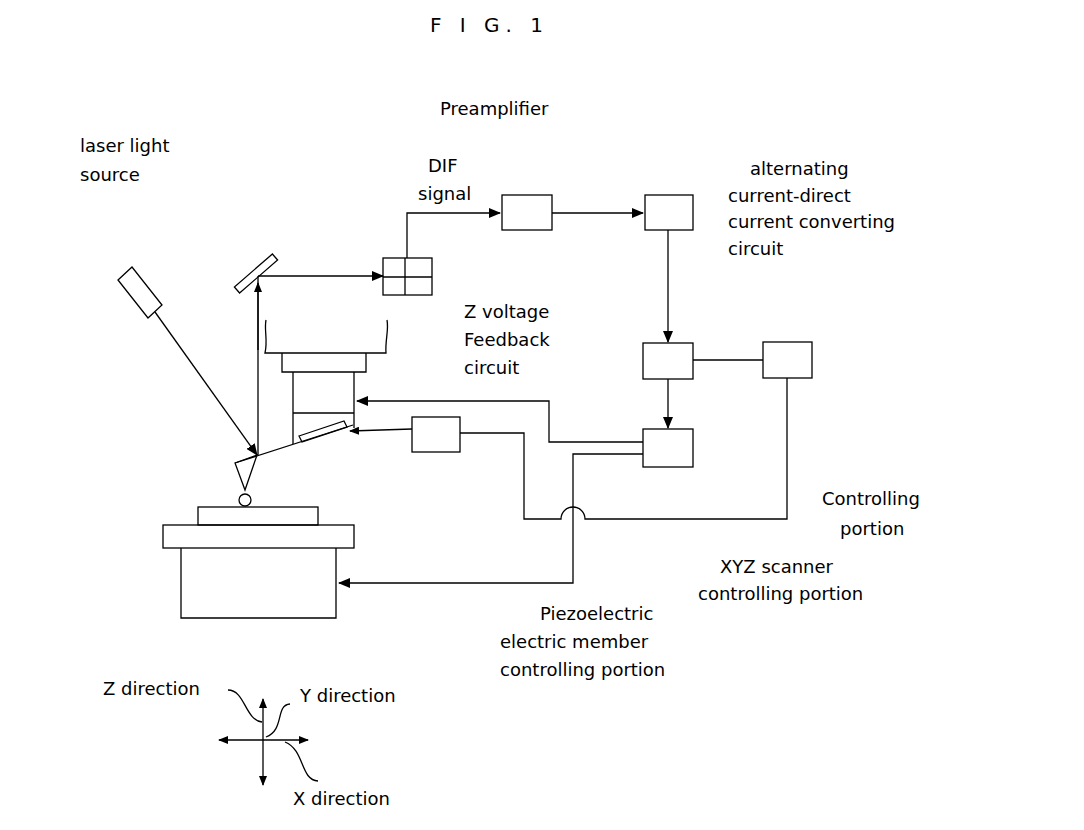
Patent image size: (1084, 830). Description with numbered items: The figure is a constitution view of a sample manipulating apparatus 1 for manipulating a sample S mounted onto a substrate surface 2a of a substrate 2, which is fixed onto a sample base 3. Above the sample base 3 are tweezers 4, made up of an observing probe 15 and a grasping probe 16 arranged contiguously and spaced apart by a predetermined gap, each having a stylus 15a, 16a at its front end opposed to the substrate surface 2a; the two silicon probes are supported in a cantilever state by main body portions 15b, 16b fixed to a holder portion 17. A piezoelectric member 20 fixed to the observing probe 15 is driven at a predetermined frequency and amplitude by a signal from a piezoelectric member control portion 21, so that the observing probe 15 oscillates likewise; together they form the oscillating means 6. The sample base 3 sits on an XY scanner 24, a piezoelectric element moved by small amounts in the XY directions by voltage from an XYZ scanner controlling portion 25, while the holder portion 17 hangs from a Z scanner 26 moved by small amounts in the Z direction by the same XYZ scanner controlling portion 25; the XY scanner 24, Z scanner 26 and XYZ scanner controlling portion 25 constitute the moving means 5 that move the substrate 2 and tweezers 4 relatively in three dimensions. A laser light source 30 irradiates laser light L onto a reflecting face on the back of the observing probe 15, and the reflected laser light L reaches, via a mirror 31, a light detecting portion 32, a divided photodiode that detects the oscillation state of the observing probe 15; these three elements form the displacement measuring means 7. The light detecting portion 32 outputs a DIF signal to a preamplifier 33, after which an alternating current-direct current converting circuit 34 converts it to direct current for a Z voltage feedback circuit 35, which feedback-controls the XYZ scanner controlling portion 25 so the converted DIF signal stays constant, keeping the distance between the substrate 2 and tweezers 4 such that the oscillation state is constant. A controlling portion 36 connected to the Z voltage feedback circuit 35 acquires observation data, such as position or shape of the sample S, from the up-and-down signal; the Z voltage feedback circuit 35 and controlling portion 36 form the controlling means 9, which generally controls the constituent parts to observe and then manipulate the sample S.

The sample manipulating apparatus 1 is at (637, 131).
The substrate 2 is at (214, 491).
The substrate surface 2a is at (222, 506).
The sample base 3 is at (163, 536).
The tweezers 4 is at (231, 454).
The moving means 5 is at (347, 608).
The oscillating means 6 is at (448, 457).
The displacement measuring means 7 is at (432, 273).
The controlling means 9 is at (803, 340).
The observing probe 15 is at (307, 467).
The grasping probe 16 is at (305, 445).
The stylus 15a is at (174, 459).
The stylus 16a is at (230, 482).
The main body portion 15b is at (364, 454).
The main body portion 16b is at (333, 434).
The holder portion 17 is at (350, 431).
The piezoelectric member 20 is at (364, 454).
The piezoelectric member control portion 21 is at (463, 443).
The XY scanner 24 is at (261, 601).
The XYZ scanner controlling portion 25 is at (668, 462).
The Z scanner 26 is at (357, 380).
The laser light source 30 is at (146, 282).
The mirror 31 is at (262, 258).
The light detecting portion 32 is at (410, 241).
The preamplifier 33 is at (536, 195).
The alternating current-direct current converting circuit 34 is at (677, 208).
The Z voltage feedback circuit 35 is at (664, 352).
The controlling portion 36 is at (807, 380).
The sample S is at (252, 499).
The laser light L is at (188, 340).